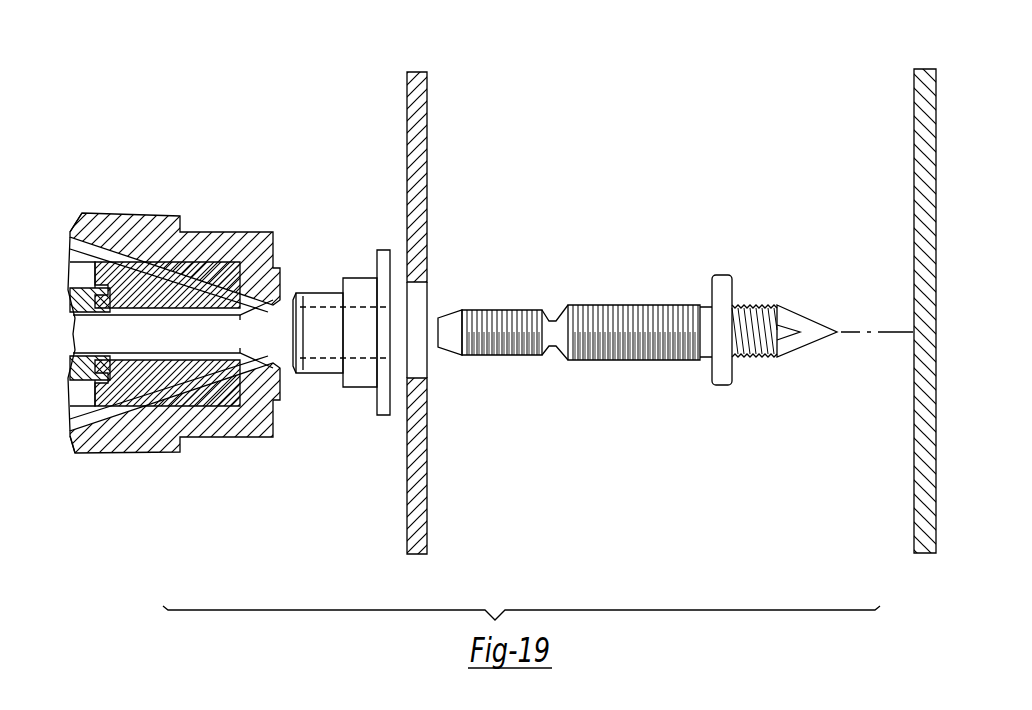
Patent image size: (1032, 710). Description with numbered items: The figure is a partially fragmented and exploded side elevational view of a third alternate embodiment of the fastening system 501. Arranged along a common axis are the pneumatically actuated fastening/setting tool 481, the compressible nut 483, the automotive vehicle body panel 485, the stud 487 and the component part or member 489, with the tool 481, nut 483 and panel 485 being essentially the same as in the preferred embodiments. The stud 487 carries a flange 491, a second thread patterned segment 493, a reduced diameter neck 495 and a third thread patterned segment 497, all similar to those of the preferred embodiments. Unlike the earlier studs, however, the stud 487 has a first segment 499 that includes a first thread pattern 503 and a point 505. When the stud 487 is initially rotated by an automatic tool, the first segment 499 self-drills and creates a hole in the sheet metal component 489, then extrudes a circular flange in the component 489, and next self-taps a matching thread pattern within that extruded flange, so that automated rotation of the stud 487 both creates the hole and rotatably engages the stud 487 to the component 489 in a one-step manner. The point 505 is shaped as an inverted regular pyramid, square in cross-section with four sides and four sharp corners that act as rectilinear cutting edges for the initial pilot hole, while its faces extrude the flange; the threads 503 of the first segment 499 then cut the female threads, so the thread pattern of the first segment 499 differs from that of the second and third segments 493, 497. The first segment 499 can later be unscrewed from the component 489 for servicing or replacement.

The fastening/setting tool 481 is at (210, 162).
The compressible nut 483 is at (352, 287).
The automotive vehicle body panel 485 is at (412, 158).
The stud 487 is at (597, 123).
The component part or member 489 is at (915, 180).
The flange 491 is at (719, 276).
The second thread patterned segment 493 is at (638, 312).
The reduced diameter neck 495 is at (551, 345).
The third thread patterned segment 497 is at (487, 316).
The first segment 499 is at (675, 346).
The fastening system 501 is at (174, 244).
The first thread pattern 503 is at (745, 357).
The point 505 is at (803, 326).